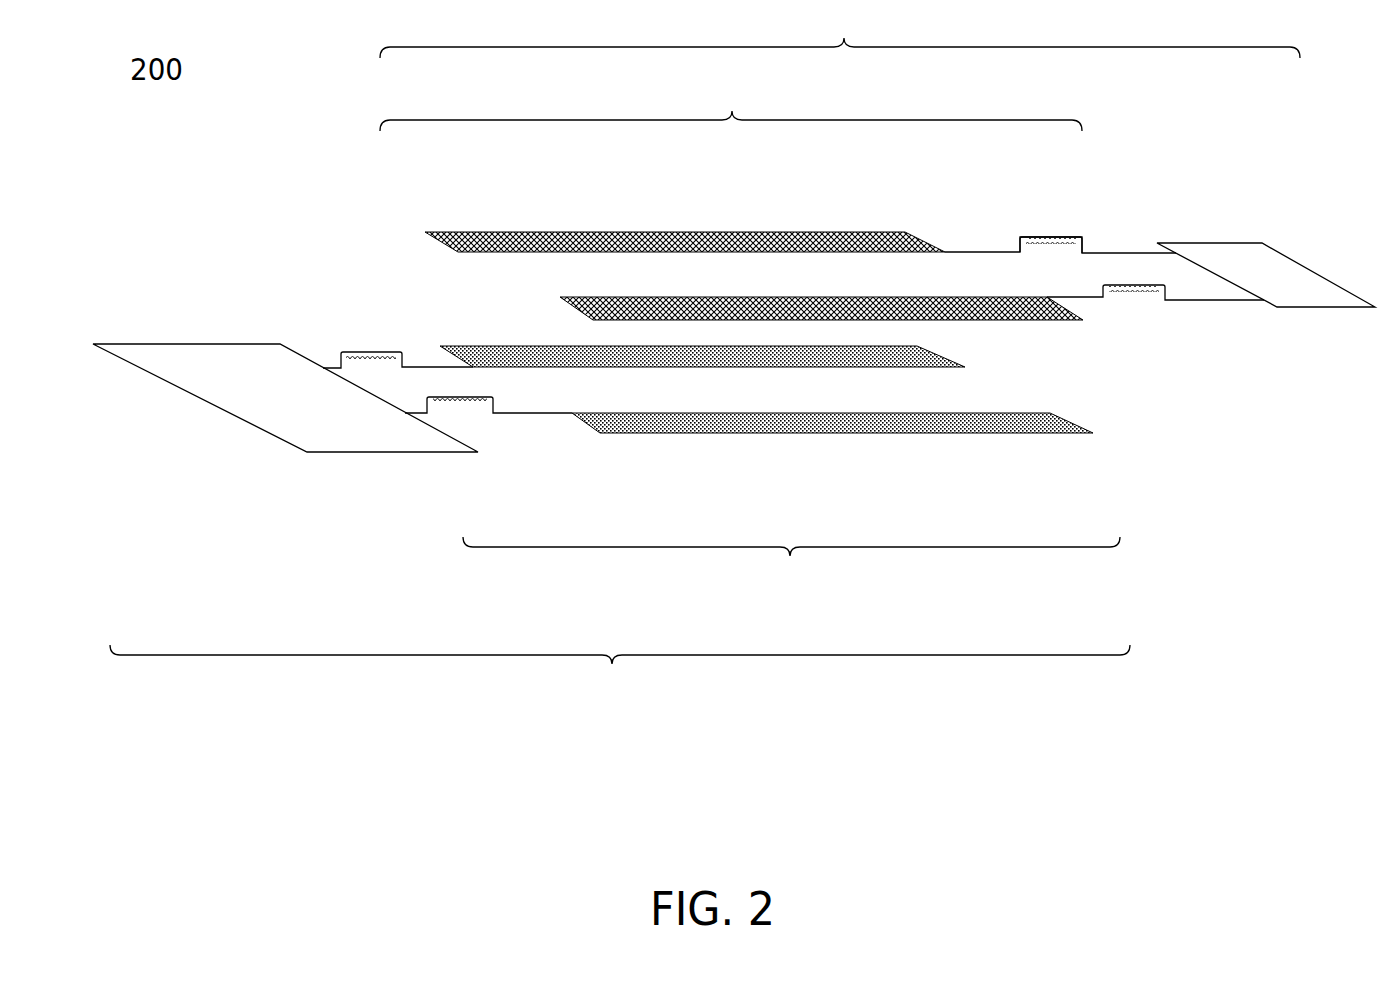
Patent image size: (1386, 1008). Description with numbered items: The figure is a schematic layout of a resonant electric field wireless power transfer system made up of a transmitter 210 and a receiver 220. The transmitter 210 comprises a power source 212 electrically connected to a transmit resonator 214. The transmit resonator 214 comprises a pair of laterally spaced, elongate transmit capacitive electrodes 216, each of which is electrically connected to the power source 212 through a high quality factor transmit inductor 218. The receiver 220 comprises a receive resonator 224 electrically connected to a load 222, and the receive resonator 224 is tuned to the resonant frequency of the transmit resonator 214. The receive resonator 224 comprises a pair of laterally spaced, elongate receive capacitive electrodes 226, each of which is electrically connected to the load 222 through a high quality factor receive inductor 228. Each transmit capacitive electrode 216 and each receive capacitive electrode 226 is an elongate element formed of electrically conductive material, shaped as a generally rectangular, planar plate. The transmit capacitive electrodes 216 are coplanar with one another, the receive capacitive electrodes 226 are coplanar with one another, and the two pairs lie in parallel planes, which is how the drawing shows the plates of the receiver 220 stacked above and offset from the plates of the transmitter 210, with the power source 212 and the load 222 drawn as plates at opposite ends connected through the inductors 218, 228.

The transmitter 210 is at (620, 676).
The power source 212 is at (400, 473).
The transmit resonator 214 is at (791, 568).
The transmit capacitive electrodes 216 is at (767, 458).
The transmit inductor 218 is at (474, 423).
The receiver 220 is at (840, 30).
The load 222 is at (1185, 240).
The receive resonator 224 is at (731, 103).
The receive capacitive electrodes 226 is at (717, 217).
The receive inductor 228 is at (1003, 241).